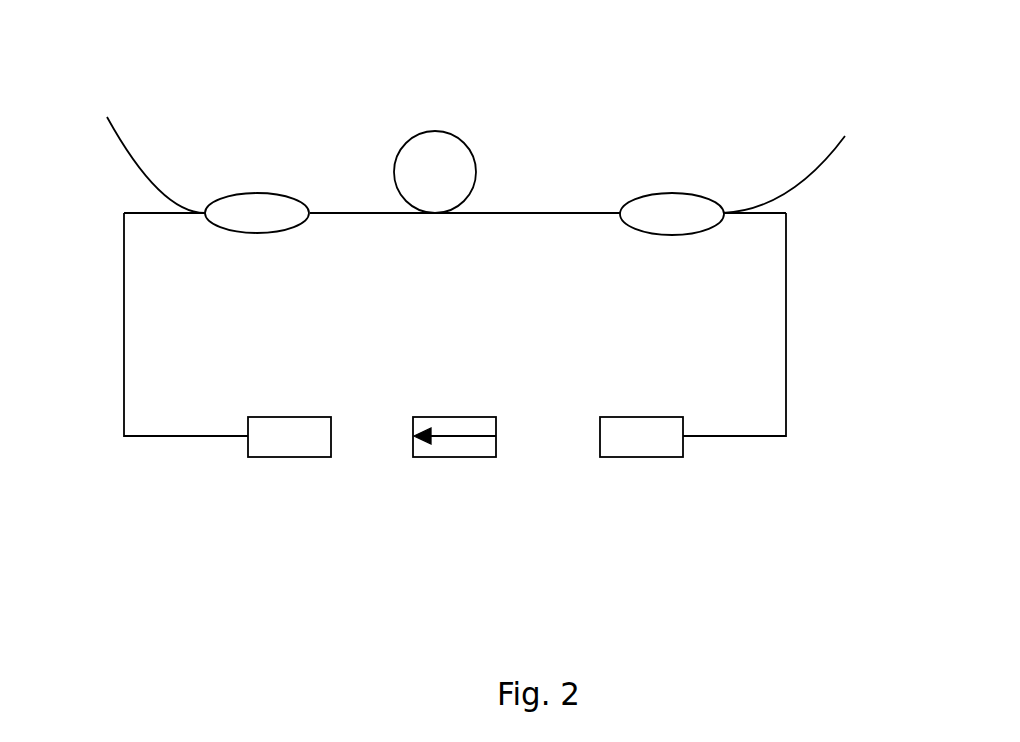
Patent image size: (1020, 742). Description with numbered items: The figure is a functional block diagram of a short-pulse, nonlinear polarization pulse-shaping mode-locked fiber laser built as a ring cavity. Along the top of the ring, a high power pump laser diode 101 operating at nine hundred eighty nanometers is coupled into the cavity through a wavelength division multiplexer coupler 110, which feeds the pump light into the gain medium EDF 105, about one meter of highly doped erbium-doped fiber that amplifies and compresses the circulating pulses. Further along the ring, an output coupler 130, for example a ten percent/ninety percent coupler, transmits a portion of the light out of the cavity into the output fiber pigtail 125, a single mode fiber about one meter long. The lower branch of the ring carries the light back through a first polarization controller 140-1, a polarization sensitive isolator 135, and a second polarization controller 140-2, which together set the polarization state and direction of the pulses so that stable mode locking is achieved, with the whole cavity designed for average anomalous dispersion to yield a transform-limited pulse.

The 980 nm high power pump laser diode 101 is at (126, 134).
The gain medium (EDF) 105 is at (443, 152).
The 980/1550 WDM coupler 110 is at (275, 217).
The output fiber pigtail 125 is at (805, 145).
The output coupler 130 is at (683, 210).
The polarization sensitive isolator 135 is at (470, 445).
The polarization controller 140-1 is at (270, 445).
The polarization controller 140-2 is at (638, 445).